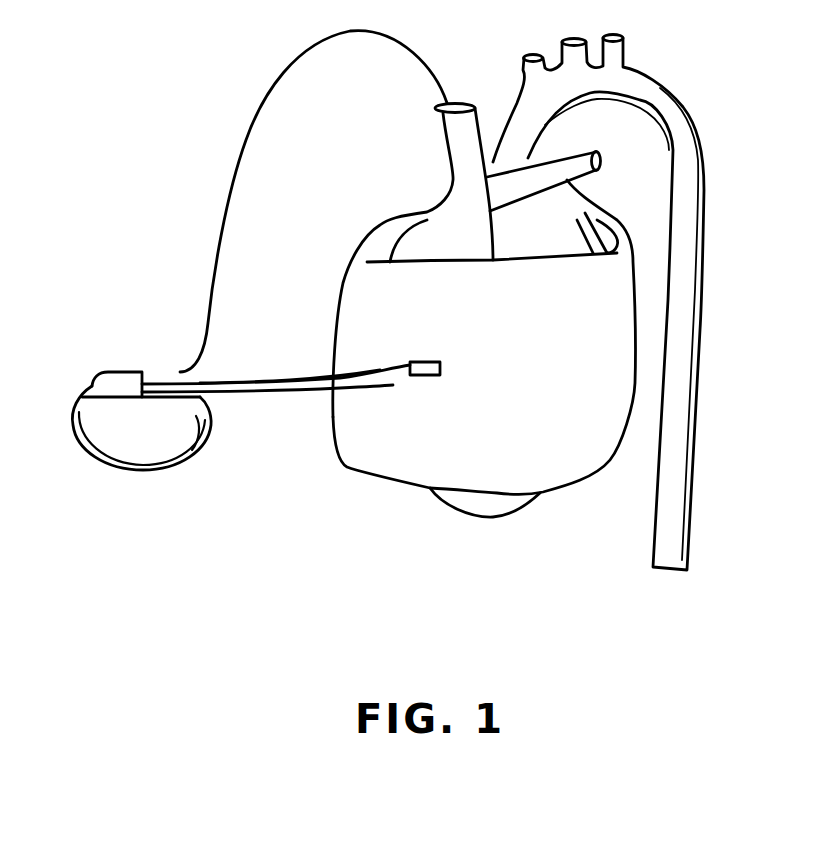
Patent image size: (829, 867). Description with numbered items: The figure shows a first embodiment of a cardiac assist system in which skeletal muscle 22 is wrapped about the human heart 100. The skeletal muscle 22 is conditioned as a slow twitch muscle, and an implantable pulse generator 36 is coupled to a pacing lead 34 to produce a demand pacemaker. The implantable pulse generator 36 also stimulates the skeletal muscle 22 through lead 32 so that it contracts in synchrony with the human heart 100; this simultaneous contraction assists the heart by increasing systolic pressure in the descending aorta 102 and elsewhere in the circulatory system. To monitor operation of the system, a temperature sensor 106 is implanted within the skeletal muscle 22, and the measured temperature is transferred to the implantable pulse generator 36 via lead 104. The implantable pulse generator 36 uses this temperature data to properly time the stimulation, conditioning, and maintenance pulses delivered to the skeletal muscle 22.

The skeletal muscle 22 is at (558, 467).
The lead 32 is at (230, 395).
The pacing lead 34 is at (227, 212).
The implantable pulse generator 36 is at (115, 433).
The human heart 100 is at (465, 232).
The descending aorta 102 is at (673, 407).
The lead 104 is at (245, 383).
The temperature sensor 106 is at (420, 360).